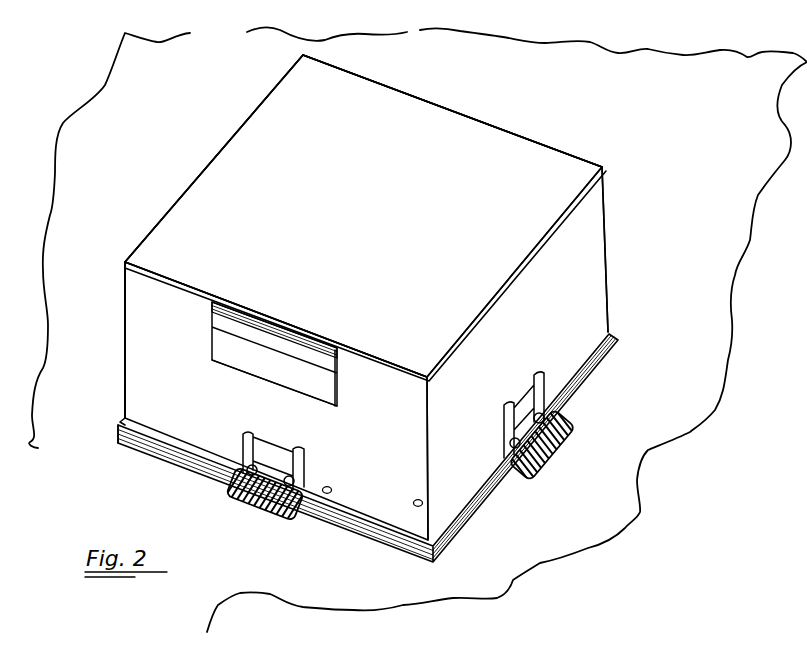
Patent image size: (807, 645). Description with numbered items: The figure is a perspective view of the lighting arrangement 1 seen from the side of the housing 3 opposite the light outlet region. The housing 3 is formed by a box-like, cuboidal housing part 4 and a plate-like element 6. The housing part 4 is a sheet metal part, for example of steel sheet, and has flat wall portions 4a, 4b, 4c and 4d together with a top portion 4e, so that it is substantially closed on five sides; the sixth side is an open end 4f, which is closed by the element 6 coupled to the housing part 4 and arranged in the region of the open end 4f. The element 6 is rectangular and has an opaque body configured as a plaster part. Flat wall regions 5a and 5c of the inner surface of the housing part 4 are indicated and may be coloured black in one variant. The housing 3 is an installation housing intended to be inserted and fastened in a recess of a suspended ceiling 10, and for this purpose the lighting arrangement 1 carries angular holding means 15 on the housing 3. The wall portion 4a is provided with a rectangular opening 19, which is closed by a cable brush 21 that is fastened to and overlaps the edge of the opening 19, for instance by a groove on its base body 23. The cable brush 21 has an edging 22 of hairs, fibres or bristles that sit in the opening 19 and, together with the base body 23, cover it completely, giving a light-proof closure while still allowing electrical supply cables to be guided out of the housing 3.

The lighting arrangement 1 is at (600, 485).
The housing 3 is at (618, 332).
The housing part 4 is at (485, 143).
The wall portion 4a is at (158, 334).
The wall portion 4b is at (580, 251).
The wall portion 4c is at (572, 146).
The wall portion 4d is at (252, 108).
The top portion 4e is at (377, 137).
The open end 4f is at (137, 445).
The wall region 5a is at (374, 348).
The wall region 5c is at (513, 148).
The plate-like element 6 is at (372, 530).
The suspended ceiling 10 is at (744, 97).
The holding means 15 is at (578, 430).
The opening 19 is at (233, 367).
The cable brush 21 is at (353, 387).
The edging 22 is at (245, 347).
The base body 23 is at (212, 302).